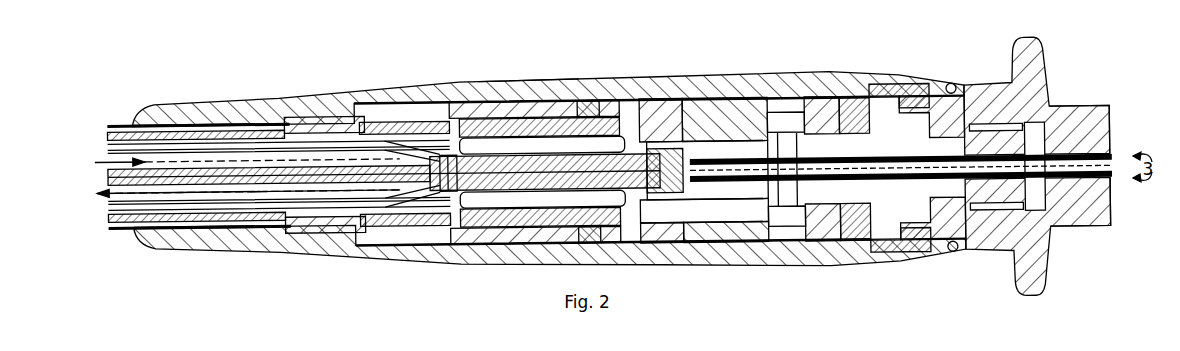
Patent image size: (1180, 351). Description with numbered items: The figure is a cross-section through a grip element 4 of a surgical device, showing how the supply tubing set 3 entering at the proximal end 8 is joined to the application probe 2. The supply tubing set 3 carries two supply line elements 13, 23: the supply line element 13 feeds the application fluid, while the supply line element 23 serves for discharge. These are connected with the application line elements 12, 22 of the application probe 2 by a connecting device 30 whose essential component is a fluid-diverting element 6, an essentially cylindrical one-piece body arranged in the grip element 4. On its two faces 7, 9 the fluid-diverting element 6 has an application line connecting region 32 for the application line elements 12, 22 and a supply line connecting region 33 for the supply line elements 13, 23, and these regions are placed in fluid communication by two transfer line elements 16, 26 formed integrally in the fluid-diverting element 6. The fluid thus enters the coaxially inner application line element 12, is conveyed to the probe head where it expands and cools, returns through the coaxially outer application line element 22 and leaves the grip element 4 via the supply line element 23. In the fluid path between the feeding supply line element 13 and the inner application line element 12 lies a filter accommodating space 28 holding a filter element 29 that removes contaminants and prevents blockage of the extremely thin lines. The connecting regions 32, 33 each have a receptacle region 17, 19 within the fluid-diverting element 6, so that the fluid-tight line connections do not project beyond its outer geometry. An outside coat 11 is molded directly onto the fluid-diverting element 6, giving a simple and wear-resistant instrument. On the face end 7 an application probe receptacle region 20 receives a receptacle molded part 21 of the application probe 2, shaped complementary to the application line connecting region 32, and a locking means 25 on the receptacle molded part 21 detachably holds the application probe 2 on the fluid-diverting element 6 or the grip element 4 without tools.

The application probe 2 is at (1080, 127).
The supply tubing set 3 is at (250, 143).
The grip element 4 is at (758, 83).
The fluid-diverting element 6 is at (730, 123).
The face end 7 is at (933, 77).
The proximal end 8 is at (150, 97).
The face 9 is at (438, 105).
The outside coat 11 is at (367, 100).
The application line element 12 is at (1136, 176).
The supply line element 13 is at (193, 160).
The transfer line element 16 is at (630, 133).
The receptacle region 17 is at (822, 108).
The receptacle region 19 is at (563, 105).
The application probe receptacle region 20 is at (885, 85).
The receptacle molded part 21 is at (920, 108).
The application line element 22 is at (1136, 152).
The supply line element 23 is at (193, 193).
The locking means 25 is at (913, 235).
The transfer line element 26 is at (717, 210).
The filter accommodating space 28 is at (702, 133).
The filter element 29 is at (660, 153).
The connecting device 30 is at (530, 68).
The application line connecting region 32 is at (842, 118).
The supply line connecting region 33 is at (587, 105).